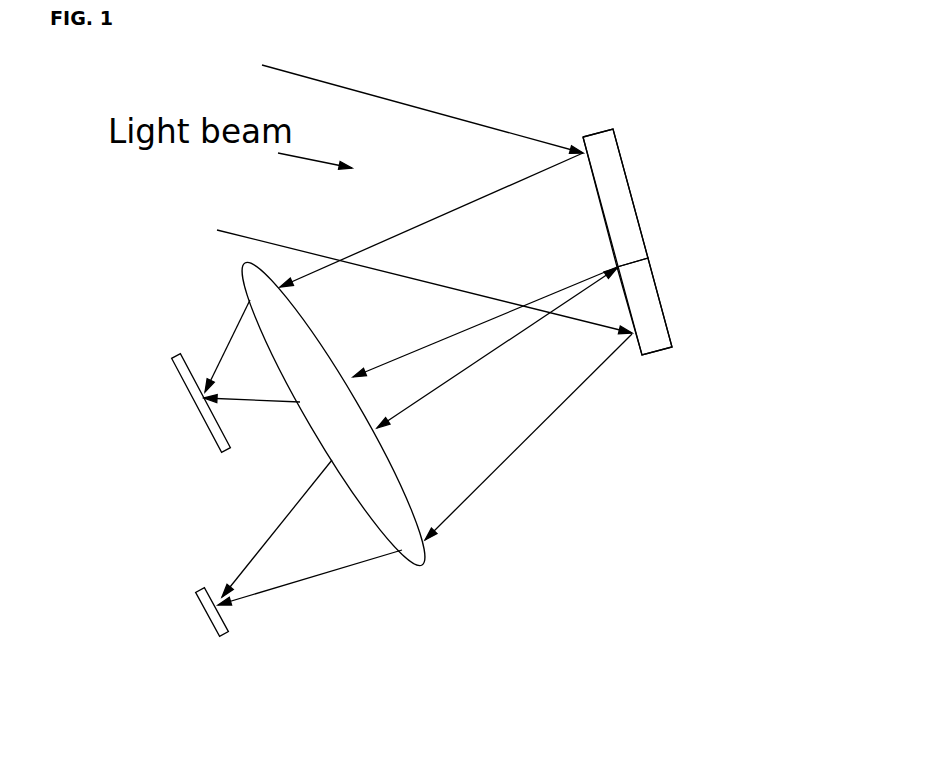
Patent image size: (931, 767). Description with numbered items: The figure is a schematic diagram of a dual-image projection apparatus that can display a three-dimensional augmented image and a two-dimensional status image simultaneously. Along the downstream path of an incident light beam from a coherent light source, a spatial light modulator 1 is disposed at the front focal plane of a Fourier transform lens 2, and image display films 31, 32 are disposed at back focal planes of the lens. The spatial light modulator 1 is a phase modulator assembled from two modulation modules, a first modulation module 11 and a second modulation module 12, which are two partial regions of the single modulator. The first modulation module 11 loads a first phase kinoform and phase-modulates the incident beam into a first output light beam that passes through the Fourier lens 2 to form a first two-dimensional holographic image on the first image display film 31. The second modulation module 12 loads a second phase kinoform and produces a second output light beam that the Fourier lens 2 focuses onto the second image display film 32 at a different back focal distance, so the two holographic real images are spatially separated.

The spatial light modulator 1 is at (689, 229).
The first modulation module 11 is at (647, 308).
The second modulation module 12 is at (622, 198).
The Fourier transform lens 2 is at (405, 538).
The first image display film 31 is at (197, 587).
The second image display film 32 is at (204, 418).